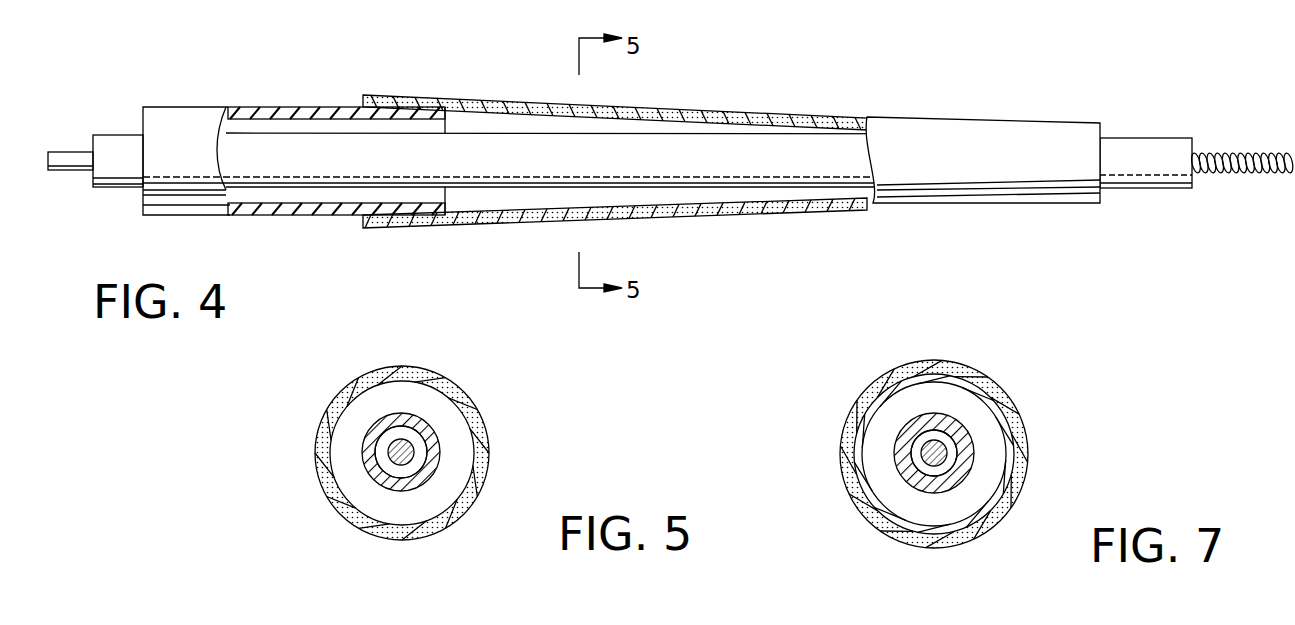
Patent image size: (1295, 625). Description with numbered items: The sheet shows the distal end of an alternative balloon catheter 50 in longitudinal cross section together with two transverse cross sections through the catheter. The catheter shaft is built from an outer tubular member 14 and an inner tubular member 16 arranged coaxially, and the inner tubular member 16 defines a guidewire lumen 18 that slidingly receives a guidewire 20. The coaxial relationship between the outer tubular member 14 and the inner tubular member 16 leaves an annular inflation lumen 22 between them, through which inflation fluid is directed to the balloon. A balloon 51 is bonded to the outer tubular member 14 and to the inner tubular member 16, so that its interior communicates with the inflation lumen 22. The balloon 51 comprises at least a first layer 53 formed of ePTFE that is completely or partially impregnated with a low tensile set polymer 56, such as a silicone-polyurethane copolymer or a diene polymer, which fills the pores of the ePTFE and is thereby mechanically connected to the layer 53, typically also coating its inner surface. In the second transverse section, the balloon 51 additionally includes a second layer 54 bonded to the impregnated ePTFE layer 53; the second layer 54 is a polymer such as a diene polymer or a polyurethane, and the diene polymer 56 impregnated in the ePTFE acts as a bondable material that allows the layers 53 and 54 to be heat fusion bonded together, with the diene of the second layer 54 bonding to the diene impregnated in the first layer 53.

In FIG. 4, the outer tubular member 14 is at (197, 128).
In FIG. 4, the inner tubular member 16 is at (130, 152).
In FIG. 5, the inner tubular member 16 is at (365, 432).
In FIG. 7, the inner tubular member 16 is at (900, 432).
In FIG. 5, the guidewire lumen 18 is at (380, 452).
In FIG. 7, the guidewire lumen 18 is at (913, 453).
In FIG. 4, the guidewire 20 is at (73, 163).
In FIG. 5, the guidewire 20 is at (392, 462).
In FIG. 7, the guidewire 20 is at (922, 467).
In FIG. 4, the annular inflation lumen 22 is at (336, 197).
In FIG. 4, the balloon catheter 50 is at (808, 82).
In FIG. 4, the balloon 51 is at (906, 131).
In FIG. 4, the first layer 53 is at (480, 100).
In FIG. 5, the first layer 53 is at (460, 398).
In FIG. 7, the first layer 53 is at (1012, 398).
In FIG. 7, the second layer 54 is at (960, 380).
In FIG. 4, the low tensile set polymer 56 is at (747, 113).
In FIG. 5, the low tensile set polymer 56 is at (487, 448).
In FIG. 7, the low tensile set polymer 56 is at (1023, 443).